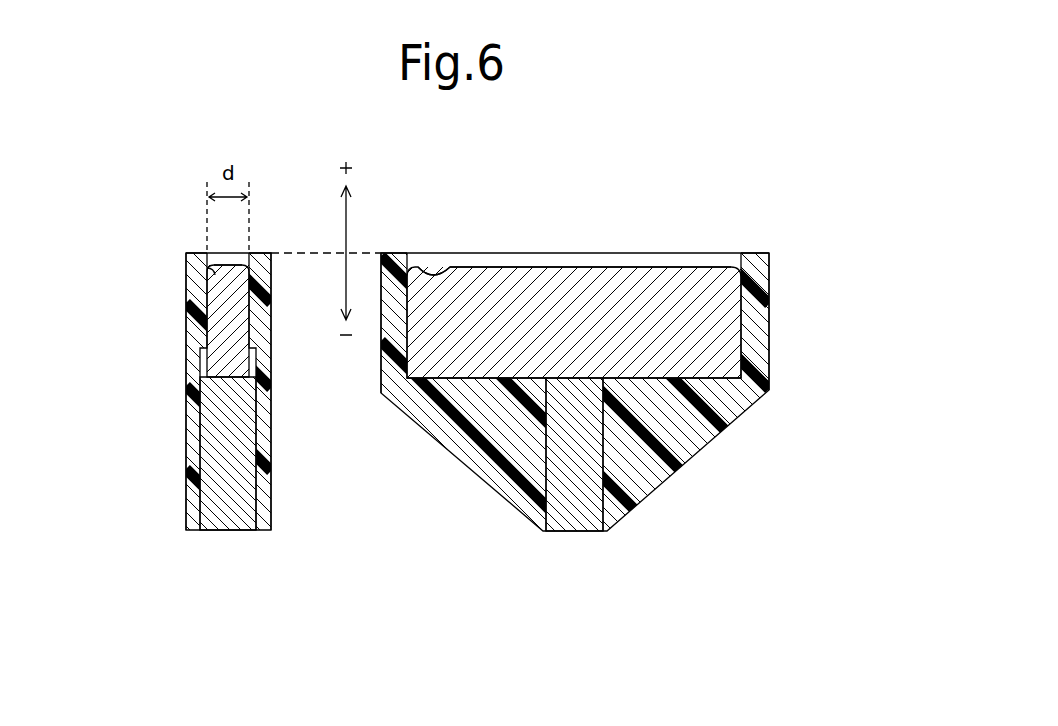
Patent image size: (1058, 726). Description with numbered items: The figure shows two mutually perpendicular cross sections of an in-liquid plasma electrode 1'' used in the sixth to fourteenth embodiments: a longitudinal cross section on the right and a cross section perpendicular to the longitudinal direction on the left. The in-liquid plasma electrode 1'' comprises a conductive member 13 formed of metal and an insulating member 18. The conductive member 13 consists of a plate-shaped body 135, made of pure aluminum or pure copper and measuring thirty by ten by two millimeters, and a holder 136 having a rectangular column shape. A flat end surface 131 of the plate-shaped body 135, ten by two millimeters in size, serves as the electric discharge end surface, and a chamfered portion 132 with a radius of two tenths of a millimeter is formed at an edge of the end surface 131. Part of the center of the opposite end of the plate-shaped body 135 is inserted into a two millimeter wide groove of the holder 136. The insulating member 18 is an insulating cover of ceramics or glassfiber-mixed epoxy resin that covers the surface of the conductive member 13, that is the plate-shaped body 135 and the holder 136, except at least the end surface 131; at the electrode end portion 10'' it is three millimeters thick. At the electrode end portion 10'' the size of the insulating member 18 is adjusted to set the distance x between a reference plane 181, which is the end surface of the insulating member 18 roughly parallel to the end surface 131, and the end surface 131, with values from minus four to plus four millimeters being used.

The in-liquid plasma electrode 1'' is at (478, 396).
The electrode end portion 10'' is at (481, 391).
The conductive member 13 is at (478, 396).
The end surface 131 is at (228, 263).
The chamfered portion 132 is at (208, 272).
The plate-shaped body 135 is at (230, 365).
The holder 136 is at (227, 473).
The insulating member 18 is at (199, 543).
The reference plane 181 is at (204, 253).